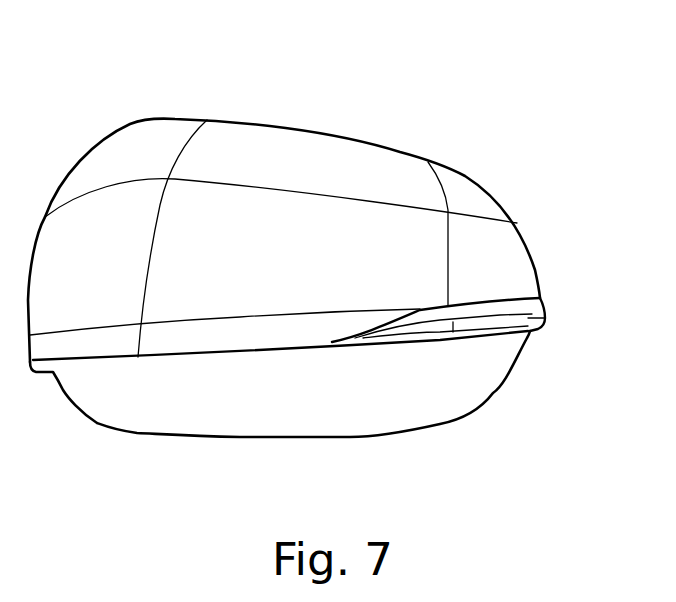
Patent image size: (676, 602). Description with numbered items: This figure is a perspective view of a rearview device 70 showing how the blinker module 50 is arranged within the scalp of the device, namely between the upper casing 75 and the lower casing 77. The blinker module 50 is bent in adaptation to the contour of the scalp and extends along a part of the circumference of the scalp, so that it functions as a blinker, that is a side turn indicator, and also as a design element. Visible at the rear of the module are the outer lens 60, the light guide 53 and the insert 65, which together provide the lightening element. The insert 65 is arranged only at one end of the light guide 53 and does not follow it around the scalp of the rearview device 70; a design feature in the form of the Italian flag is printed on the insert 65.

The rearview device 70 is at (366, 96).
The upper casing 75 is at (385, 247).
The insert 65 is at (478, 330).
The outer lens 60 is at (541, 298).
The light guide 53 is at (545, 318).
The blinker module 50 is at (547, 352).
The lower casing 77 is at (477, 385).